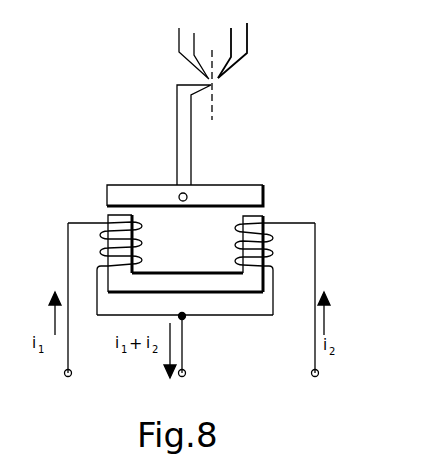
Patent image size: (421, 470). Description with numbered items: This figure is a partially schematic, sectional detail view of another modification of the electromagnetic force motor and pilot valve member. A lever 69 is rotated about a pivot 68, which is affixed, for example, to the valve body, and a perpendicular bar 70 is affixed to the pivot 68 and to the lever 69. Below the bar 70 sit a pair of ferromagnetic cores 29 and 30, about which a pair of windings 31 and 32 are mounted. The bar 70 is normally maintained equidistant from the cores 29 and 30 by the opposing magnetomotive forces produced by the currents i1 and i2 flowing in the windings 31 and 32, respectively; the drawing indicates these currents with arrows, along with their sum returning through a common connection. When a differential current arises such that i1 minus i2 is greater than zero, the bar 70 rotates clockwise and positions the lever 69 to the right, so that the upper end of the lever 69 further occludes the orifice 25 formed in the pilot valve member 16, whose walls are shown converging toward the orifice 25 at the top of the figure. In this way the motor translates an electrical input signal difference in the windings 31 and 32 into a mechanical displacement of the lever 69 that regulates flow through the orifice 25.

The magnetic head 16 is at (217, 42).
The orifice 25 is at (220, 78).
The lever 69 is at (183, 141).
The perpendicular bar 70 is at (132, 193).
The pivot 68 is at (183, 201).
The ferromagnetic core 29 is at (112, 217).
The ferromagnetic core 30 is at (258, 220).
The winding 31 is at (132, 248).
The winding 32 is at (242, 260).